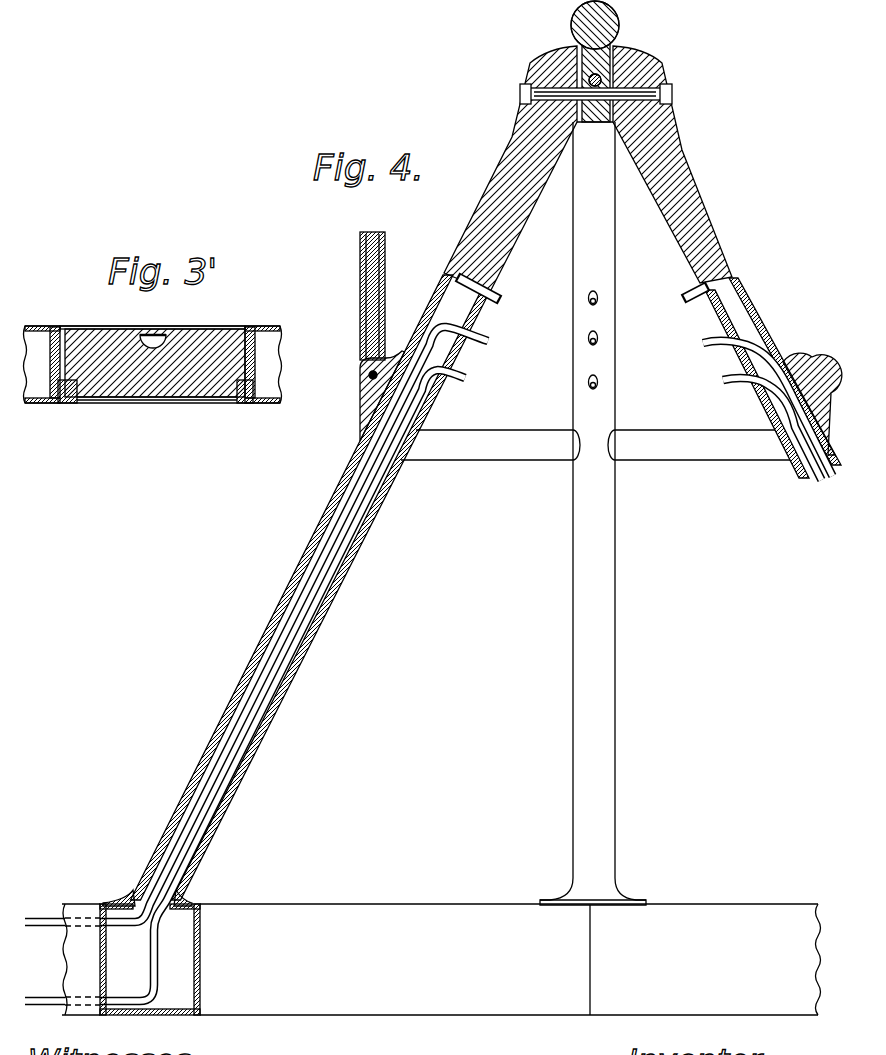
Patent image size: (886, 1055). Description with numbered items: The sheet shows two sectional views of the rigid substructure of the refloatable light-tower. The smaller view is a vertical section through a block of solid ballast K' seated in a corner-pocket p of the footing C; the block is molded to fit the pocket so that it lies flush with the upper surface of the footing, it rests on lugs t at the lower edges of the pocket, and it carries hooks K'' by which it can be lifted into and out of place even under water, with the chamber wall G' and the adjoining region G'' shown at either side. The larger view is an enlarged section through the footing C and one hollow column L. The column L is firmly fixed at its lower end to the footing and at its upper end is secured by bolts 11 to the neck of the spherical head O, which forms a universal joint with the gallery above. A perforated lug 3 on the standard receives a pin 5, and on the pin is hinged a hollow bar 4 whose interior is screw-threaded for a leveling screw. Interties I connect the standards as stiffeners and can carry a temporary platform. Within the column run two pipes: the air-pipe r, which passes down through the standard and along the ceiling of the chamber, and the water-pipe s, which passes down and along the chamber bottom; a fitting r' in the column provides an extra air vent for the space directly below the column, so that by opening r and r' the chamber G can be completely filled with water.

In FIG. 3', the base or footing C is at (50, 326).
In FIG. 4, the base or footing C is at (441, 959).
In FIG. 3', the air-chamber G' is at (42, 383).
In FIG. 3', the side plate G'' is at (266, 344).
In FIG. 3', the solid ballast K' is at (155, 384).
In FIG. 3', the hooks K'' is at (133, 319).
In FIG. 3', the corner-pocket p is at (197, 327).
In FIG. 3', the lug t is at (70, 397).
In FIG. 4, the hollow column L is at (697, 216).
In FIG. 4, the spherical head O is at (615, 27).
In FIG. 4, the bolts 11 is at (590, 78).
In FIG. 4, the interties I is at (595, 447).
In FIG. 4, the hollow bar 4 is at (360, 294).
In FIG. 4, the perforated lug 3 is at (361, 402).
In FIG. 4, the pin 5 is at (368, 375).
In FIG. 4, the fitting r' is at (582, 292).
In FIG. 4, the air-pipe r is at (425, 633).
In FIG. 4, the water-pipe s is at (466, 380).
In FIG. 4, the box G is at (150, 959).